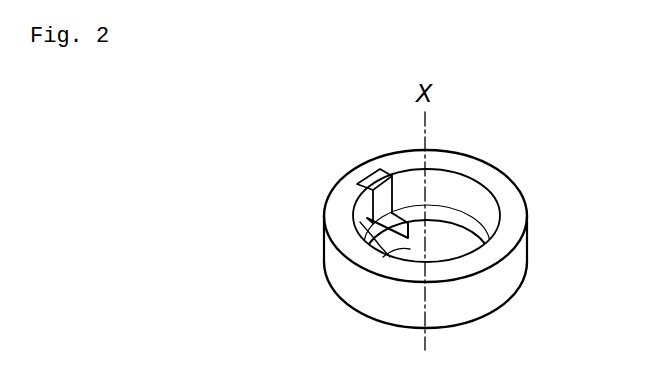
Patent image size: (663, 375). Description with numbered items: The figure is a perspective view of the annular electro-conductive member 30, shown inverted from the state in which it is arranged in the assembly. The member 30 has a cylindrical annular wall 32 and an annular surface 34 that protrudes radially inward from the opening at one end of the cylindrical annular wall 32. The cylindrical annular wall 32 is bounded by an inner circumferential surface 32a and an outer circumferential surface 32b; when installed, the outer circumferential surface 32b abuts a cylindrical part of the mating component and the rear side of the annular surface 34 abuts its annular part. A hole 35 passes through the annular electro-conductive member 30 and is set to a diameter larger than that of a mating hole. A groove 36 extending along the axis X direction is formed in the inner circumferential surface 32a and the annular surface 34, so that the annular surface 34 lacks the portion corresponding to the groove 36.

The annular electro-conductive member 30 is at (454, 232).
The cylindrical annular wall 32 is at (456, 232).
The inner circumferential surface 32a is at (445, 184).
The outer circumferential surface 32b is at (480, 295).
The annular surface 34 is at (460, 217).
The hole 35 is at (390, 247).
The groove 36 is at (370, 187).